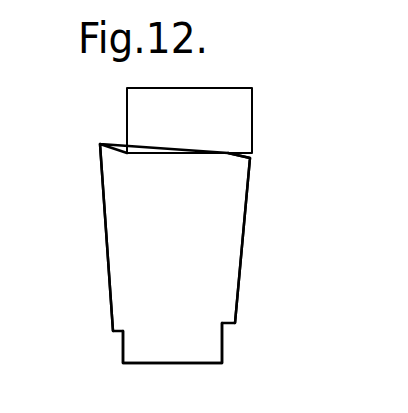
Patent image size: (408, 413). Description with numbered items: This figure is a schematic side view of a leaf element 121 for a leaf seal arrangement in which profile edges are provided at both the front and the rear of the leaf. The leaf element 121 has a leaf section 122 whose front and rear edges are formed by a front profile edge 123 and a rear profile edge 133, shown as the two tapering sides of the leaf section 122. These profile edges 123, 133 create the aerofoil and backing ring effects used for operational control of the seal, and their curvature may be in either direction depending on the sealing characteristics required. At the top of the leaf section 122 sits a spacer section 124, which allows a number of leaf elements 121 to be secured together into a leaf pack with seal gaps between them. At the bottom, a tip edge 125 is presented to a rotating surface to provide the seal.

The leaf element 121 is at (196, 258).
The leaf section 122 is at (182, 266).
The front profile edge 123 is at (237, 216).
The spacer section 124 is at (215, 100).
The bottom tip edge 125 is at (188, 366).
The rear profile edge 133 is at (116, 262).